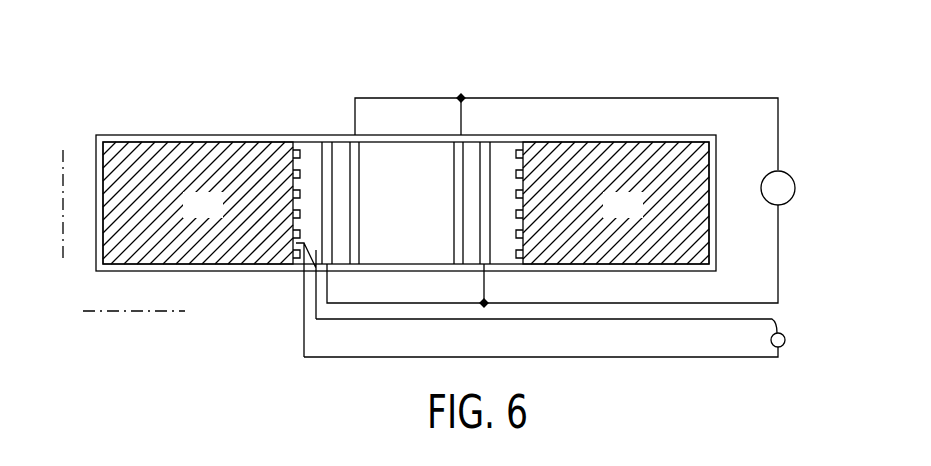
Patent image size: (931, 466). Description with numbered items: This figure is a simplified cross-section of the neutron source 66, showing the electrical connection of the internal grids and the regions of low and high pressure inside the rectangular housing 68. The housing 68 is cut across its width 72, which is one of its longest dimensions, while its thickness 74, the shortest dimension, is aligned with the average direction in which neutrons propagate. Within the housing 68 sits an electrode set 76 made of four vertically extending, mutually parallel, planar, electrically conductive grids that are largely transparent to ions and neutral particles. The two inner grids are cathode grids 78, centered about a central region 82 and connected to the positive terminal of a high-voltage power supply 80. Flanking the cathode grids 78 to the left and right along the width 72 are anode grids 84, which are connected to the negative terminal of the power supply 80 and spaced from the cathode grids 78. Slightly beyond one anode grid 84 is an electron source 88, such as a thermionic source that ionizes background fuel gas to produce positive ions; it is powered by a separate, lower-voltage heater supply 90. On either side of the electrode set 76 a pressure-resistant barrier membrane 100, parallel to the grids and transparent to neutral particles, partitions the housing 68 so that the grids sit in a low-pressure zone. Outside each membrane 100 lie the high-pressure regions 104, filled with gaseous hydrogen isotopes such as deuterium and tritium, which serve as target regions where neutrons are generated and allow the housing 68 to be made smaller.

The neutron source 66 is at (128, 60).
The housing 68 is at (108, 135).
The width 72 is at (150, 313).
The thickness 74 is at (62, 200).
The electrode set 76 is at (452, 62).
The cathode grids 78 is at (351, 160).
The high-voltage power supply 80 is at (795, 186).
The central region 82 is at (413, 225).
The anode grids 84 is at (322, 157).
The electron source 88 is at (292, 243).
The heater supply 90 is at (786, 337).
The barrier membrane 100 is at (297, 174).
The high-pressure region 104 is at (219, 215).